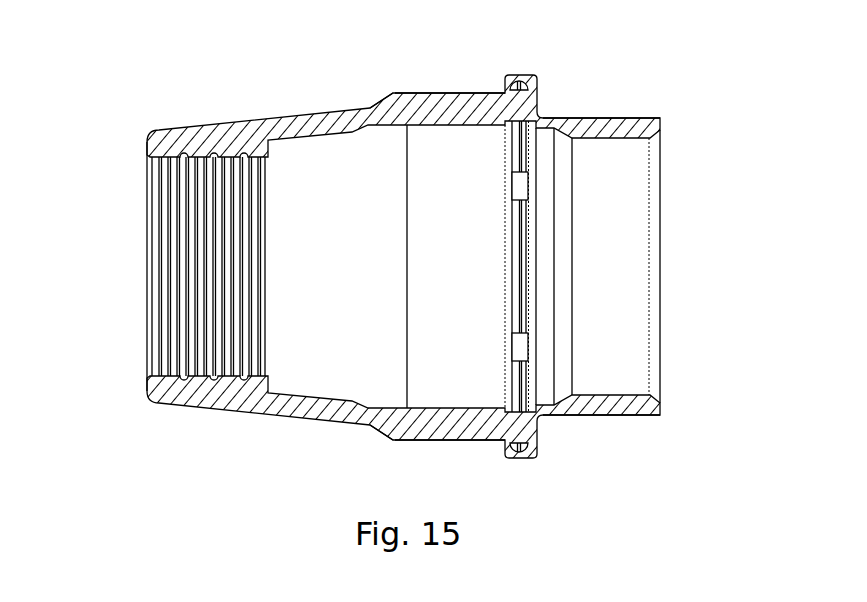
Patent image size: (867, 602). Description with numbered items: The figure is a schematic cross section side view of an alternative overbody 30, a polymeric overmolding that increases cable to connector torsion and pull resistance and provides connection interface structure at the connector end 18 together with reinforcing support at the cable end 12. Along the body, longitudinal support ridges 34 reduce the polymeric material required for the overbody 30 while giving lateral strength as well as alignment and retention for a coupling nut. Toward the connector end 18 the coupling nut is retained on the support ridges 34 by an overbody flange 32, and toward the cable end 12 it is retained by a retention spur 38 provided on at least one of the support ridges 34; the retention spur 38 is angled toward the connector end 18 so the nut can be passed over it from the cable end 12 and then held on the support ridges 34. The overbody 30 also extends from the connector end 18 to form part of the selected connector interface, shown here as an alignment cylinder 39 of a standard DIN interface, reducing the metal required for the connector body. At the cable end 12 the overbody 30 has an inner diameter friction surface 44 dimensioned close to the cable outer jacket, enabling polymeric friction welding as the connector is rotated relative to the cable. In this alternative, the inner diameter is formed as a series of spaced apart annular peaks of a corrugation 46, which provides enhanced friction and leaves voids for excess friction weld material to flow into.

The cable end 12 is at (130, 257).
The corrugation 46 is at (179, 182).
The inner diameter friction surface 44 is at (239, 160).
The retention spur 38 is at (395, 93).
The longitudinal support ridges 34 is at (455, 95).
The overbody 30 is at (642, 72).
The overbody flange 32 is at (522, 75).
The alignment cylinder 39 is at (630, 185).
The connector end 18 is at (687, 265).